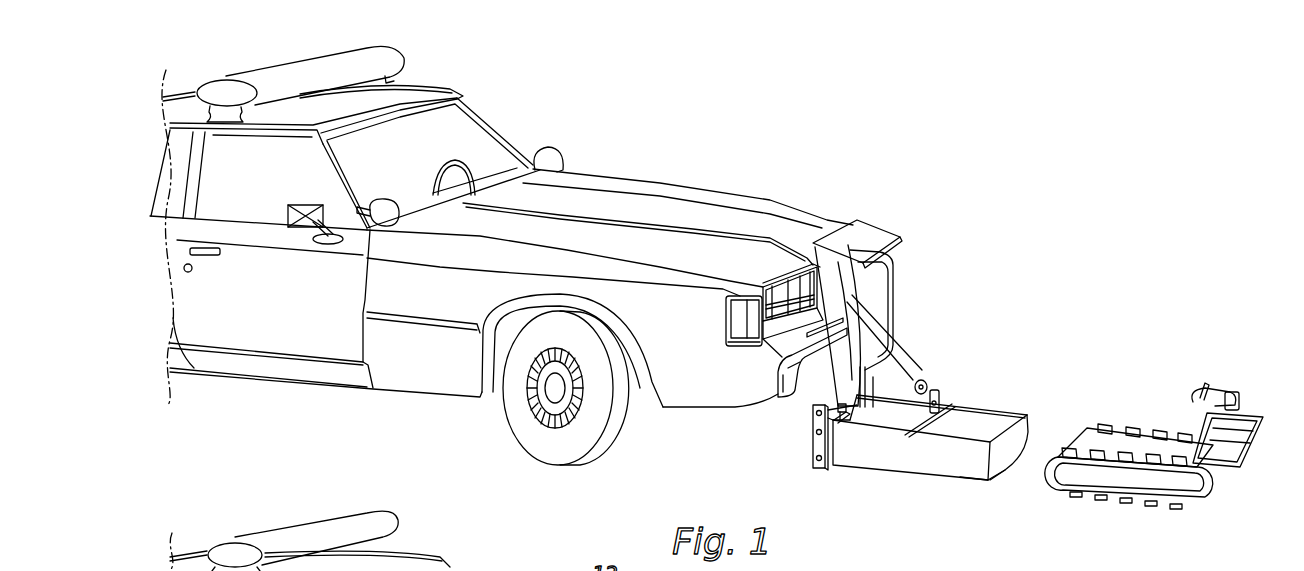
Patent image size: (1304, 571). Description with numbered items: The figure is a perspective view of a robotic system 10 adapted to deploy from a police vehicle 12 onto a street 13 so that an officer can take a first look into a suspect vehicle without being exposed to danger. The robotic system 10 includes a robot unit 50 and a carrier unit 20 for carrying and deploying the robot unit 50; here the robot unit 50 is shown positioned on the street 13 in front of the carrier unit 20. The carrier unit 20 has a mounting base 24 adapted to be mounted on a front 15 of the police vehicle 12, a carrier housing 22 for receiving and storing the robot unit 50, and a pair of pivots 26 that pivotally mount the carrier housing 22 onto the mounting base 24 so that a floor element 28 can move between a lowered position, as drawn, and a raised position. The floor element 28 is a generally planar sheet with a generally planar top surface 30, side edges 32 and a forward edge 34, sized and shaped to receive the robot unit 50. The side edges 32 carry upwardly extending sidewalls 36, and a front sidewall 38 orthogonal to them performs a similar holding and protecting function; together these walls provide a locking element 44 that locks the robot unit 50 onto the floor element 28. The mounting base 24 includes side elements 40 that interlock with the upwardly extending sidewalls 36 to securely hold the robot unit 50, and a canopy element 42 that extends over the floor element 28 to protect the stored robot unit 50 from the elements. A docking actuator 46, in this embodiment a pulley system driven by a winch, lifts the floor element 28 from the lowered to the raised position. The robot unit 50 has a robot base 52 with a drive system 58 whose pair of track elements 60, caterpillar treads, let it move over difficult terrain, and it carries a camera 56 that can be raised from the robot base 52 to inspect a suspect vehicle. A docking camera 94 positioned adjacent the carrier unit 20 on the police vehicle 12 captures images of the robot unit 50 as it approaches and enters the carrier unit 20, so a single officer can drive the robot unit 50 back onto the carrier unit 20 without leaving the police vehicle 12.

The robotic system 10 is at (1107, 190).
The police vehicle 12 is at (667, 188).
The street 13 is at (1084, 535).
The front 15 is at (776, 396).
The carrier unit 20 is at (1108, 249).
The carrier housing 22 is at (893, 318).
The plow blade assembly 24 is at (1030, 394).
The pivots 26 is at (812, 404).
The floor element 28 is at (1000, 474).
The top surface 30 is at (1004, 452).
The side edges 32 is at (972, 485).
The forward edge 34 is at (1020, 458).
The upwardly extending sidewalls 36 is at (970, 407).
The front sidewall 38 is at (844, 425).
The side elements 40 is at (877, 272).
The canopy element 42 is at (876, 234).
The locking element 44 is at (1000, 309).
The docking actuator 46 is at (927, 381).
The robot unit 50 is at (1209, 374).
The robot base 52 is at (1131, 447).
The camera 56 is at (1233, 401).
The drive system 58 is at (1205, 510).
The track elements 60 is at (1143, 466).
The docking camera 94 is at (783, 283).